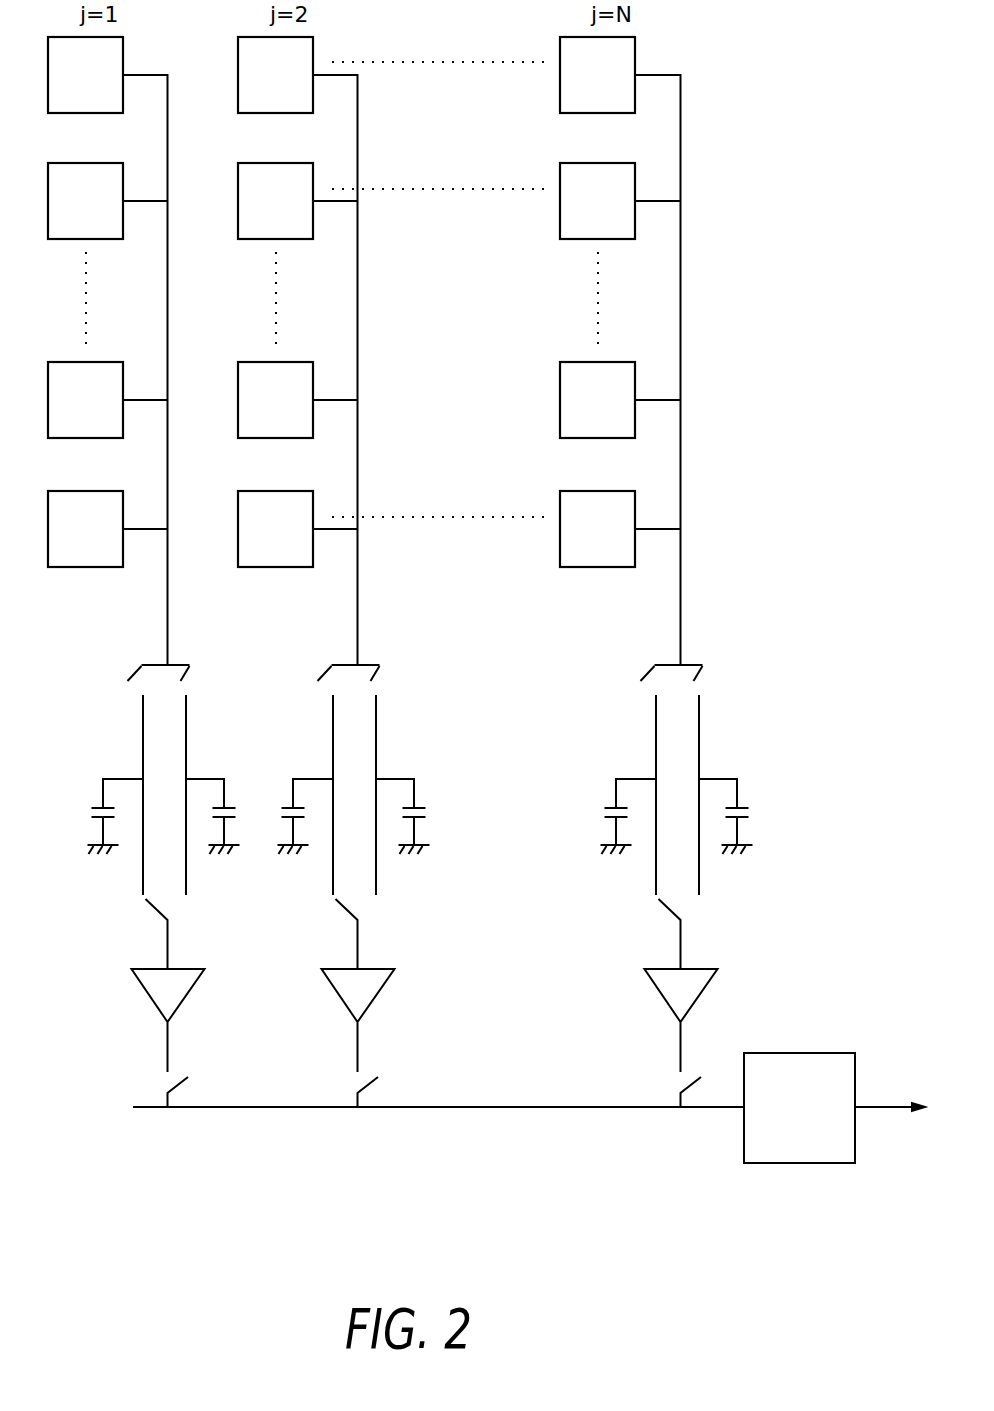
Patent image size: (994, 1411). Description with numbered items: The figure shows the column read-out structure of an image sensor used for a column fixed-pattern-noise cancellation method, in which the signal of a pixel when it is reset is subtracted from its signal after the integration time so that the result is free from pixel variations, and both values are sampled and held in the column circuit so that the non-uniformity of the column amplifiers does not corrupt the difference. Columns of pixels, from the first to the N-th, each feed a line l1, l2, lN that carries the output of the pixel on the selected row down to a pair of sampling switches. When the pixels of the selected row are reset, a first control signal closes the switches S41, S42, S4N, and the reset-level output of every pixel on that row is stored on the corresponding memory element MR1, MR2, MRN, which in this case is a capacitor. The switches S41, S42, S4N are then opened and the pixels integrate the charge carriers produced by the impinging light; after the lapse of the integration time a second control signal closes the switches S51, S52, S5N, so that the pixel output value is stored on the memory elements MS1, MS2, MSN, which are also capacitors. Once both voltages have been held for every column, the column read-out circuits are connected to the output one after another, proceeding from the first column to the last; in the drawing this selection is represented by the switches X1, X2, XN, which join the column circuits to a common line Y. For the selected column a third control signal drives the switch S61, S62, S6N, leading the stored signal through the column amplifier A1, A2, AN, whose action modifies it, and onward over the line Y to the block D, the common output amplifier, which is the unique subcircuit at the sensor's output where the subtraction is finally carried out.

The column signal line 1 l1 is at (163, 370).
The column signal line 2 l2 is at (353, 370).
The column signal line N lN is at (676, 370).
The switch S4 S41 is at (137, 684).
The switch S4 S42 is at (327, 684).
The switch S4 S4N is at (650, 684).
The switch S5 S51 is at (210, 685).
The switch S5 S52 is at (400, 685).
The switch S5 S5N is at (724, 685).
The memory element Mr MR1 is at (113, 795).
The memory element Mr MR2 is at (306, 795).
The memory element Mr MRN is at (629, 795).
The memory element Ms MS1 is at (213, 795).
The memory element Ms MS2 is at (403, 795).
The memory element Ms MSN is at (726, 795).
The switch S6 S61 is at (184, 934).
The switch S6 S62 is at (374, 934).
The switch S6 S6N is at (698, 934).
The column amplifier A1 is at (152, 1020).
The column amplifier A2 is at (342, 1020).
The column amplifier AN is at (665, 1020).
The horizontal scanning switch column 1 X1 is at (156, 1085).
The horizontal scanning switch column 2 X2 is at (346, 1085).
The horizontal scanning switch column N XN is at (668, 1085).
The horizontal output line Y is at (438, 1126).
The common output amplifier D is at (834, 1108).